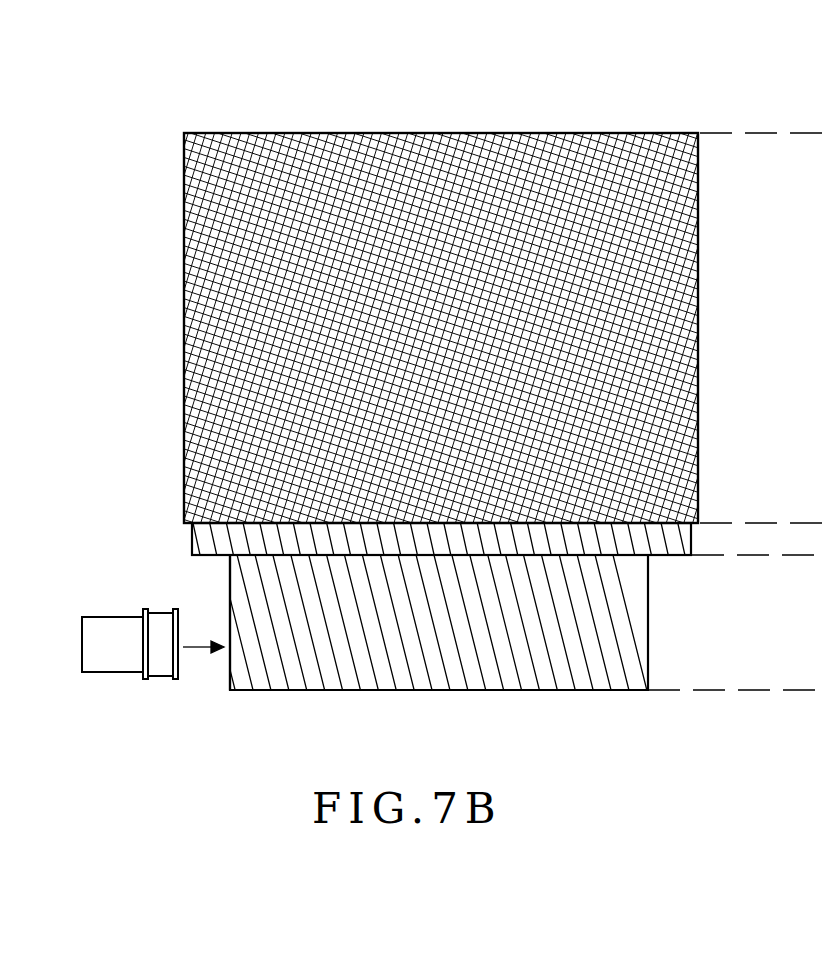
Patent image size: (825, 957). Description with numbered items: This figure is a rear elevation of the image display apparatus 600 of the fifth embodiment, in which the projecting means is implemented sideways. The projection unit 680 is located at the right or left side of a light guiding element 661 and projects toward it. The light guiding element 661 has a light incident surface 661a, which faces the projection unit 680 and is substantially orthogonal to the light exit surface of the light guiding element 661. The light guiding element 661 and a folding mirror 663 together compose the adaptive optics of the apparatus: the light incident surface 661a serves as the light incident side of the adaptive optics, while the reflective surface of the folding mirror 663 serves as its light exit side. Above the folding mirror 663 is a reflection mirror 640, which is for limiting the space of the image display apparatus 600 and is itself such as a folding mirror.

The image display apparatus 600 is at (265, 93).
The reflection mirror 640 is at (693, 424).
The folding mirror 663 is at (196, 541).
The light guiding element 661 is at (415, 651).
The light incident surface 661a is at (230, 680).
The projection unit 680 is at (98, 662).